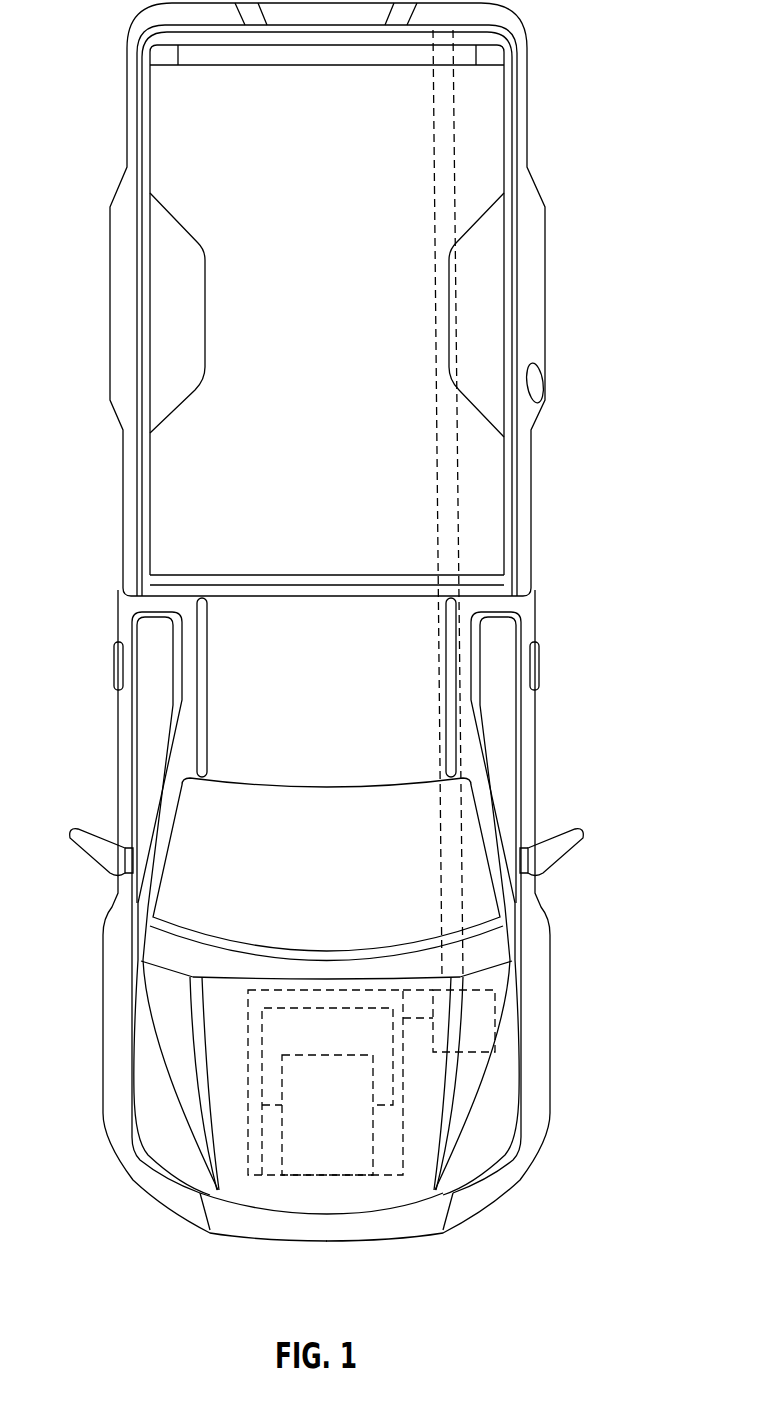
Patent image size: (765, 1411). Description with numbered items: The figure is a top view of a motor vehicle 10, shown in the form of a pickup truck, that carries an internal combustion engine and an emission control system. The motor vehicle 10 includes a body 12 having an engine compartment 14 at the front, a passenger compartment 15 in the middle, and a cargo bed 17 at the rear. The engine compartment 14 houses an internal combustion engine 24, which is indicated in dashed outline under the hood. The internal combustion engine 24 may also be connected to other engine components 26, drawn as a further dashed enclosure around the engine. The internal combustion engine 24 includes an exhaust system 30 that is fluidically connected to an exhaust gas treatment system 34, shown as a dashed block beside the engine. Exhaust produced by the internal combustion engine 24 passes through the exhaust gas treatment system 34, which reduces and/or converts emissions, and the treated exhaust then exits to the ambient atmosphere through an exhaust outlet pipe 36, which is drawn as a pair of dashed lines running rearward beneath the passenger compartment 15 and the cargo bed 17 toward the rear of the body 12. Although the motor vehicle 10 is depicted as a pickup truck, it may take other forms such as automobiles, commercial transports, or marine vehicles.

The motor vehicle 10 is at (570, 254).
The body 12 is at (540, 495).
The engine compartment 14 is at (185, 1047).
The passenger compartment 15 is at (205, 826).
The cargo bed 17 is at (205, 437).
The internal combustion engine 24 is at (333, 1150).
The other engine components 26 is at (256, 1170).
The exhaust system 30 is at (421, 1137).
The exhaust gas treatment system 34 is at (478, 1068).
The exhaust outlet pipe 36 is at (470, 184).